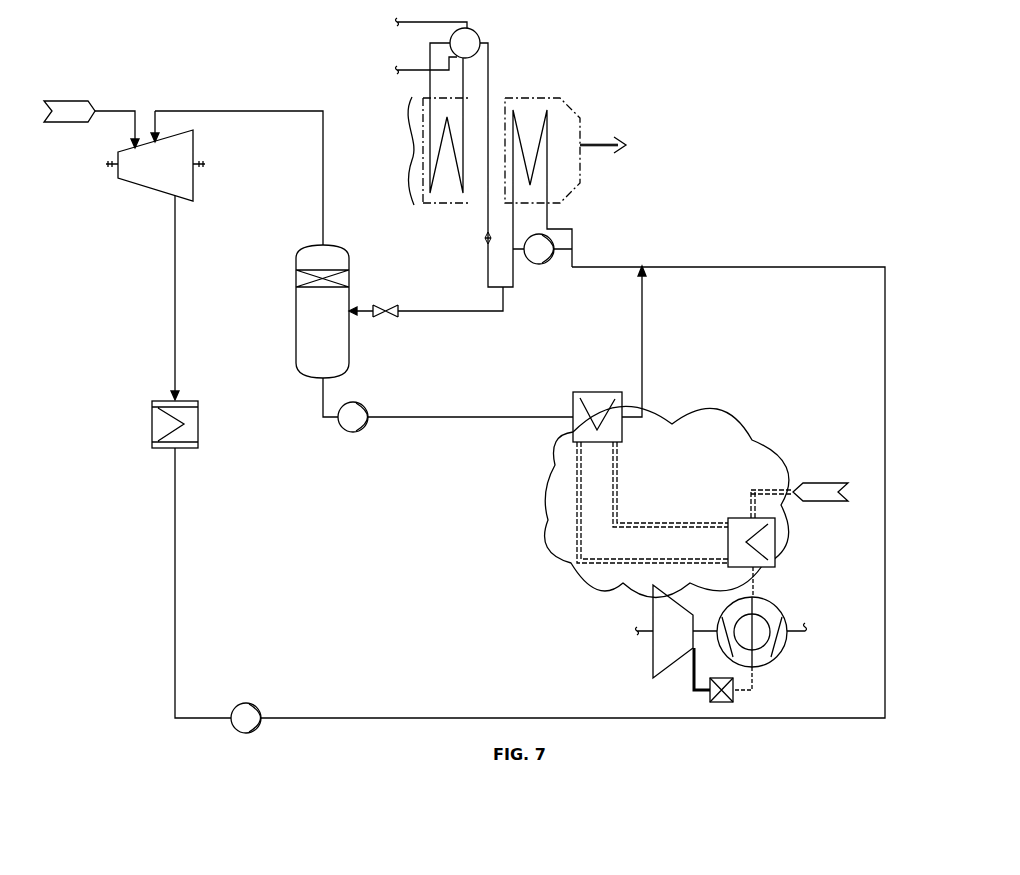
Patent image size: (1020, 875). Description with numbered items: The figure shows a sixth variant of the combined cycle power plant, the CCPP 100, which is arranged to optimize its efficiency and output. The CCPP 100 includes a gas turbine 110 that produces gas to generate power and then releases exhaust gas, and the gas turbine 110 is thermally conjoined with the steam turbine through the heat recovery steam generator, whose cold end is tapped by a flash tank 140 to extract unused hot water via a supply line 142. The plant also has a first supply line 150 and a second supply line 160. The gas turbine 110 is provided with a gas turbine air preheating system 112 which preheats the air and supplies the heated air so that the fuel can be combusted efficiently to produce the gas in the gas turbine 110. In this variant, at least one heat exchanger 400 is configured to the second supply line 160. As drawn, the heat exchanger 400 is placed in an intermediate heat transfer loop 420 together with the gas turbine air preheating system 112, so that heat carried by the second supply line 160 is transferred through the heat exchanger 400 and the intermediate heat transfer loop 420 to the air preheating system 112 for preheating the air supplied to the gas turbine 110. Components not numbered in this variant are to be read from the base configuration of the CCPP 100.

The CCPP 100 is at (749, 137).
The gas turbine 110 is at (642, 657).
The gas turbine air preheating system 112 is at (790, 535).
The flash tank 140 is at (288, 278).
The supply line 142 is at (426, 309).
The first supply line 150 is at (255, 178).
The second supply line 160 is at (448, 412).
The heat exchanger 400 is at (553, 445).
The intermediate heat transfer loop 420 is at (573, 553).